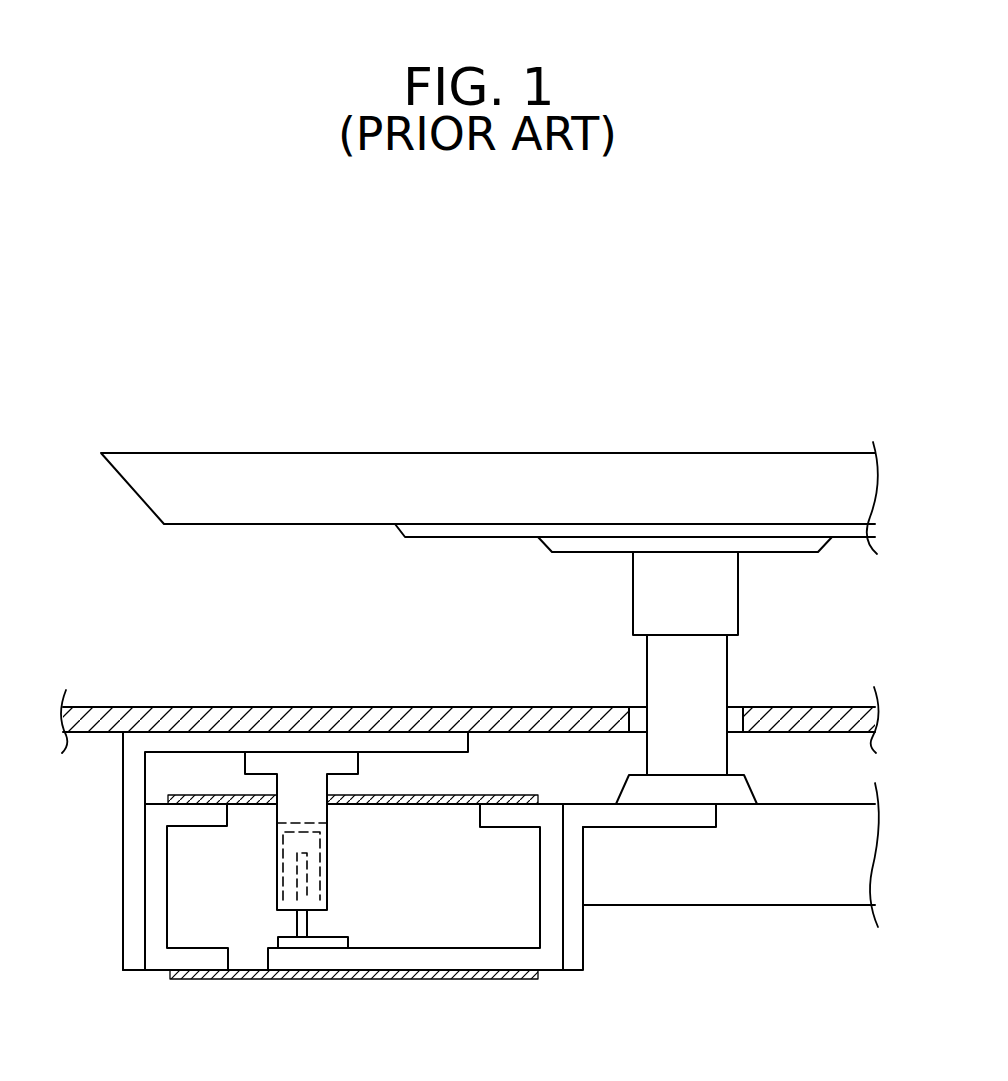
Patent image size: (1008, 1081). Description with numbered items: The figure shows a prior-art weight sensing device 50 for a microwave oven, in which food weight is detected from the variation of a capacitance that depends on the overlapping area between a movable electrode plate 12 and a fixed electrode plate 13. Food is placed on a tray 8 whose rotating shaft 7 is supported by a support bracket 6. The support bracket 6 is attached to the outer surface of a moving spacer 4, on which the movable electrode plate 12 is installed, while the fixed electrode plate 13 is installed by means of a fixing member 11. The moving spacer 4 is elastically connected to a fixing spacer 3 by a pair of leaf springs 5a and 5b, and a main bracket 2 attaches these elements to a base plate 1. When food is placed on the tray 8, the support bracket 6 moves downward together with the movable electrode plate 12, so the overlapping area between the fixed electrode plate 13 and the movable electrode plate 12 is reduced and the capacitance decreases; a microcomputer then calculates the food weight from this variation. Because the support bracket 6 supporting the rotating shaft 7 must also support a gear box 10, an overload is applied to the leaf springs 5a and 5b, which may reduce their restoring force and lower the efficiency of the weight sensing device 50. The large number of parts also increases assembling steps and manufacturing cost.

The weight sensing device 50 is at (483, 357).
The tray 8 is at (253, 466).
The rotating shaft 7 is at (667, 675).
The base plate 1 is at (172, 706).
The main bracket 2 is at (133, 853).
The fixing spacer 3 is at (155, 913).
The moving spacer 4 is at (552, 952).
The leaf spring 5a is at (412, 797).
The leaf spring 5b is at (477, 976).
The support bracket 6 is at (577, 932).
The gear box 10 is at (760, 878).
The fixing member 11 is at (270, 882).
The movable electrode plate 12 is at (302, 925).
The fixed electrode plate 13 is at (325, 883).